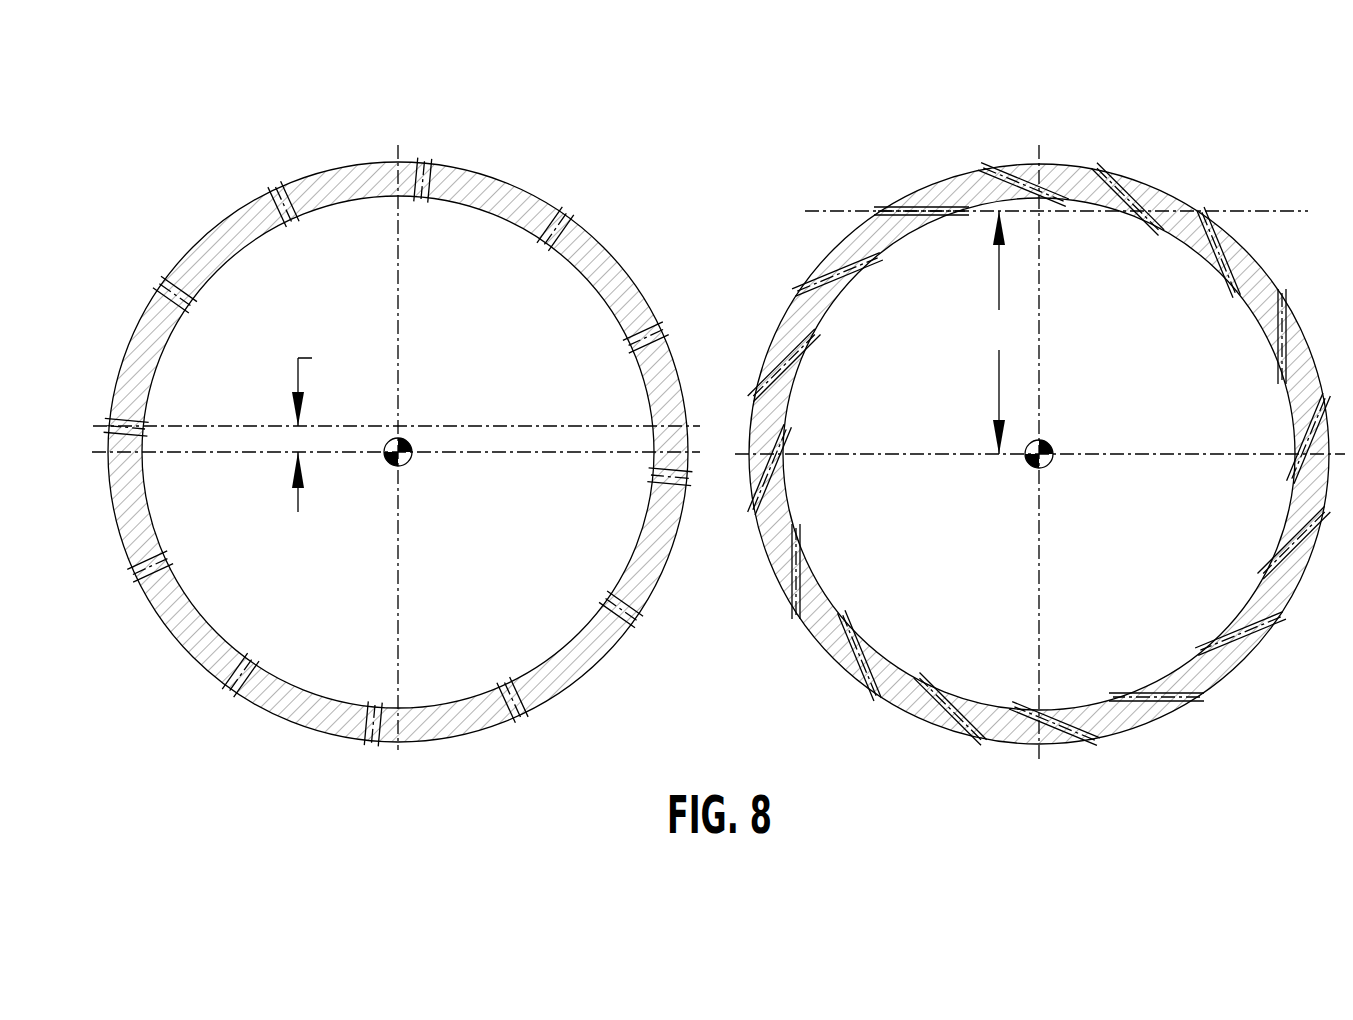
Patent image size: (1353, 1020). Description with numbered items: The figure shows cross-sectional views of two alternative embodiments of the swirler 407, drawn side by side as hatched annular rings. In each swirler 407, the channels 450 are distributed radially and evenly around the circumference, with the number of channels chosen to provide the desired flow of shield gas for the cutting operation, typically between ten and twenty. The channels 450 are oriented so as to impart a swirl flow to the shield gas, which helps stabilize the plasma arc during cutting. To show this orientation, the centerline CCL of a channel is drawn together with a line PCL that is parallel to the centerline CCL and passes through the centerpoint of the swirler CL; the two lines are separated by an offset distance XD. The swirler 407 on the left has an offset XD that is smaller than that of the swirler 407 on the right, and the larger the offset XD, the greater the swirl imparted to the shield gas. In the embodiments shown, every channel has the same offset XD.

The swirler 407 is at (468, 125).
The channels 450 is at (424, 156).
The centerpoint of the swirler CL is at (410, 460).
The line parallel to the centerline PCL is at (223, 453).
The channel centerline CCL is at (186, 426).
The offset distance XD is at (652, 361).